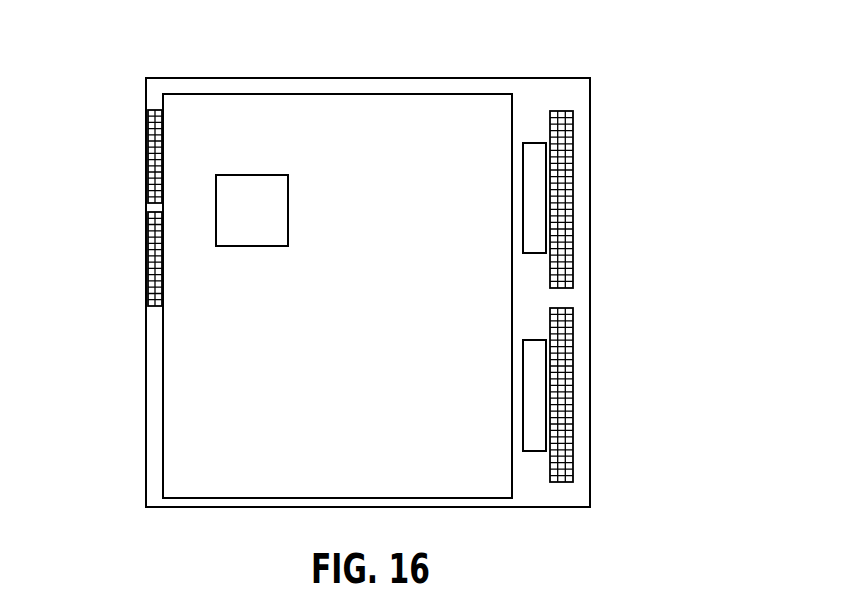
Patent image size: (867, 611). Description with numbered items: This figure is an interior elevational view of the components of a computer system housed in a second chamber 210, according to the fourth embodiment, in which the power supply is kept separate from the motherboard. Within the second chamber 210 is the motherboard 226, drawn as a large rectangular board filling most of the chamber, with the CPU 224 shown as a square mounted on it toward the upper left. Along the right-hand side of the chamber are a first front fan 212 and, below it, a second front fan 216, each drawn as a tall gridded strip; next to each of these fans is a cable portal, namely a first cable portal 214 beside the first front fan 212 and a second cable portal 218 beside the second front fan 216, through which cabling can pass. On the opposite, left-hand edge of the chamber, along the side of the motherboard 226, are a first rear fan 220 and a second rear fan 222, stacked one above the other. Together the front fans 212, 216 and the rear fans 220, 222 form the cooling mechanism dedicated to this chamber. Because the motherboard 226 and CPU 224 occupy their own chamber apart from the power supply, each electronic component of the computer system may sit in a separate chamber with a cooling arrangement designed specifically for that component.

The second chamber 210 is at (678, 53).
The first front fan 212 is at (573, 157).
The first cable portal 214 is at (547, 215).
The second front fan 216 is at (573, 352).
The second cable portal 218 is at (547, 412).
The first rear fan 220 is at (148, 157).
The second rear fan 222 is at (148, 262).
The CPU 224 is at (216, 220).
The motherboard 226 is at (163, 373).